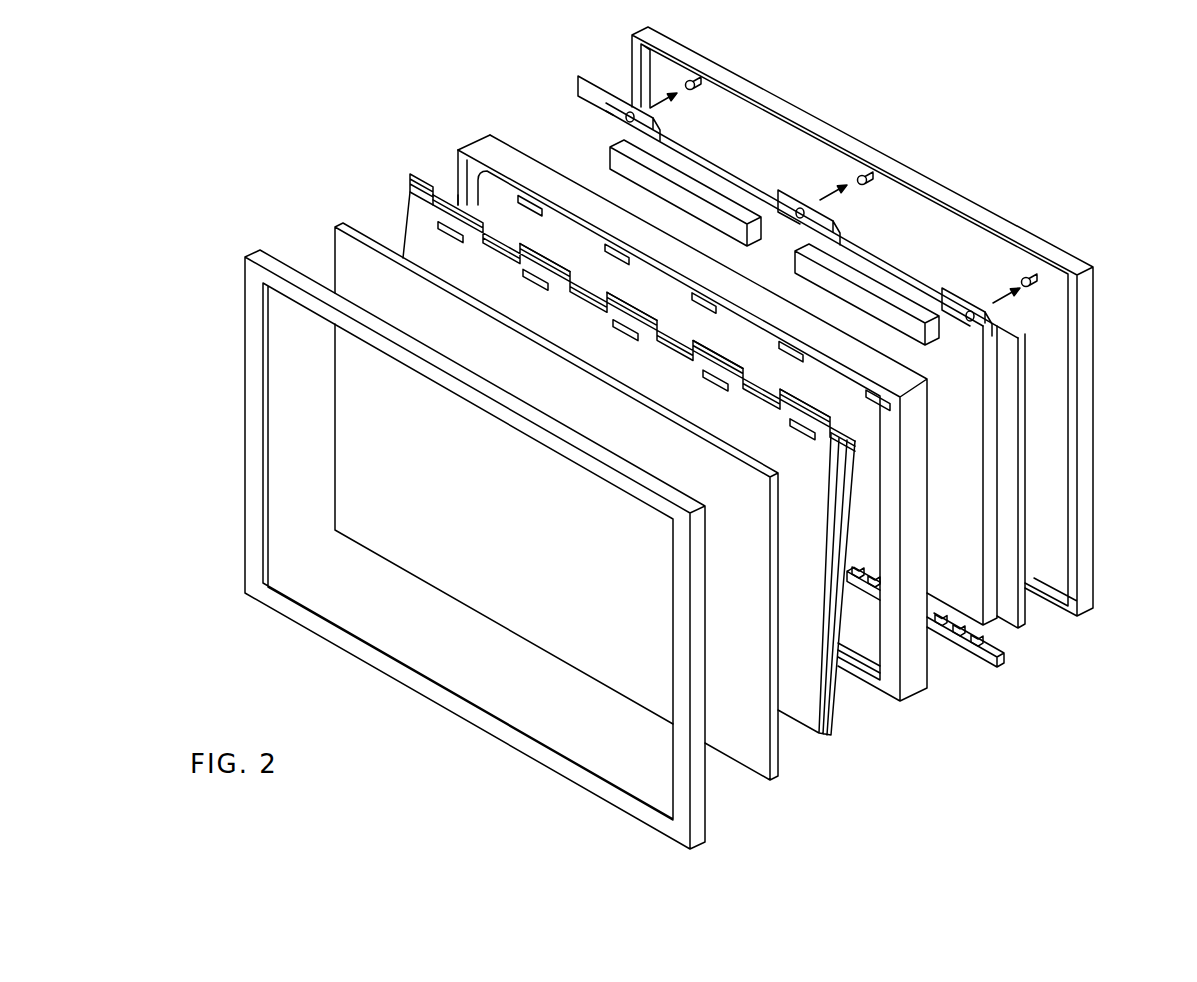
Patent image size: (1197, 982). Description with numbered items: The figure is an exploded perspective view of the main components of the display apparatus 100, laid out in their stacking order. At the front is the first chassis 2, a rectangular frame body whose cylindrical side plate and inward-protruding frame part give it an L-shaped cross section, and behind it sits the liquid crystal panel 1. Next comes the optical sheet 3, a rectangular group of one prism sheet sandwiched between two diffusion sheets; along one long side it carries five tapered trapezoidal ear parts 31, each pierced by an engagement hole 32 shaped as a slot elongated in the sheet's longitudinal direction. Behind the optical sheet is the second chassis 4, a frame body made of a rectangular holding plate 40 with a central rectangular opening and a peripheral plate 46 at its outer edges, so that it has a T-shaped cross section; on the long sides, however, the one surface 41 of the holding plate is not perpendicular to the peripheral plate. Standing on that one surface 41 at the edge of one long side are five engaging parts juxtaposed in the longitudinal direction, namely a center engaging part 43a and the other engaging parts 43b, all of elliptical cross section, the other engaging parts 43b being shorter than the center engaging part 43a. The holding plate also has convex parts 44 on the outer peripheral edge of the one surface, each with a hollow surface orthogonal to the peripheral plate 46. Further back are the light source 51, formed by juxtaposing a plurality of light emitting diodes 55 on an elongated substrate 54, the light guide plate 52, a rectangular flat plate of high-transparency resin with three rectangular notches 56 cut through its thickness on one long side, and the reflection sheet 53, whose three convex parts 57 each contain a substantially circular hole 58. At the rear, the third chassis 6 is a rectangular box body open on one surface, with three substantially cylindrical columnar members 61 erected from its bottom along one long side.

The display apparatus 100 is at (290, 150).
The liquid crystal panel 1 is at (752, 772).
The first chassis 2 is at (572, 785).
The optical sheet 3 is at (593, 467).
The ear part 31 is at (412, 200).
The engagement hole 32 is at (440, 190).
The second chassis 4 is at (780, 417).
The holding plate 40 is at (453, 196).
The one surface 41 is at (463, 172).
The center engaging part 43a is at (683, 280).
The other engaging parts 43b is at (606, 246).
The convex part 44 is at (457, 197).
The peripheral plate 46 is at (486, 147).
The light source 51 is at (937, 670).
The light guide plate 52 is at (993, 622).
The reflection sheet 53 is at (1027, 630).
The substrate 54 is at (991, 650).
The light emitting diodes 55 is at (948, 624).
The notch 56 is at (606, 153).
The convex part 57 is at (628, 113).
The hole 58 is at (657, 124).
The third chassis 6 is at (1092, 580).
The columnar member 61 is at (695, 80).